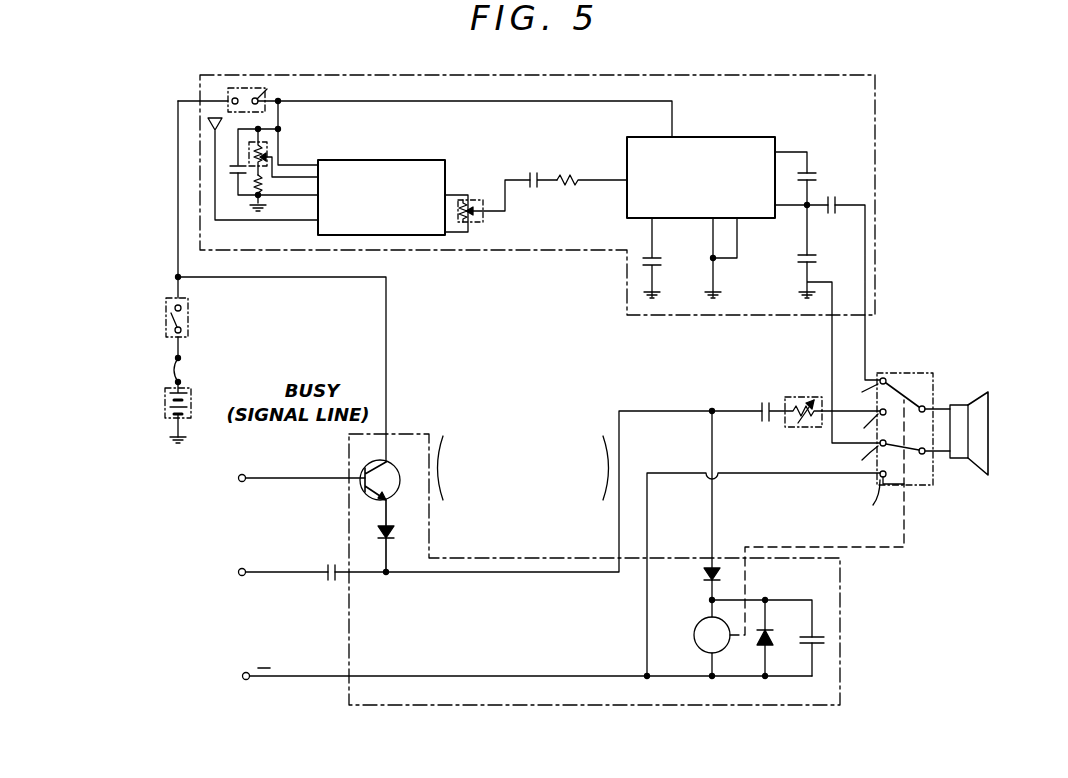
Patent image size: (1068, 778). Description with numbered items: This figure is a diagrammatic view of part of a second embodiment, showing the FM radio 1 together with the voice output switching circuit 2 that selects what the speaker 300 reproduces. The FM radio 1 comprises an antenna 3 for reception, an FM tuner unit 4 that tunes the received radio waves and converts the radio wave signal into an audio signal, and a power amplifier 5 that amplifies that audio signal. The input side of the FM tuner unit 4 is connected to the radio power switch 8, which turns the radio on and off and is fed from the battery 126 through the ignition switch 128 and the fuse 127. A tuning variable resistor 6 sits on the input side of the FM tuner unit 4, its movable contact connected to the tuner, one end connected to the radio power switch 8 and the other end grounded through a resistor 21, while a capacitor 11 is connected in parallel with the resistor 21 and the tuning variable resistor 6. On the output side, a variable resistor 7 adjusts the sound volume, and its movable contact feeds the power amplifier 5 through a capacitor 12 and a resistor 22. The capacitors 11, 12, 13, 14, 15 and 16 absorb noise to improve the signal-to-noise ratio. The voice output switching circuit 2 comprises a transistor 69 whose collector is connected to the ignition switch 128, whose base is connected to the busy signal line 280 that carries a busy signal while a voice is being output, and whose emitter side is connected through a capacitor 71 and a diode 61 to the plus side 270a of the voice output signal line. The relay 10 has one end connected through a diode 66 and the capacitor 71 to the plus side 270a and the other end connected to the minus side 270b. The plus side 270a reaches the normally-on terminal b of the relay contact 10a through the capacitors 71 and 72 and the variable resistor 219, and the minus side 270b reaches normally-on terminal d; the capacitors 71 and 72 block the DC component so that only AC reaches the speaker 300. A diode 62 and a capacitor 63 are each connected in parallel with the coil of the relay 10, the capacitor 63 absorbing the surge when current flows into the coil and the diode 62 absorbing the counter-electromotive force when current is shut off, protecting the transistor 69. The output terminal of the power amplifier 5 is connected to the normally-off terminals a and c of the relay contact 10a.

The FM radio 1 is at (740, 75).
The voice output switching circuit 2 is at (487, 557).
The antenna 3 is at (208, 125).
The FM tuner unit 4 is at (432, 160).
The power amplifier 5 is at (745, 137).
The tuning variable resistor 6 is at (266, 155).
The sound volume variable resistor 7 is at (483, 220).
The radio power switch 8 is at (263, 88).
The relay RY1 10 is at (698, 642).
The relay contact 10a is at (926, 373).
The capacitor 11 is at (236, 178).
The capacitor 12 is at (531, 172).
The capacitor 13 is at (660, 262).
The capacitor 14 is at (812, 172).
The capacitor 15 is at (812, 262).
The capacitor 16 is at (836, 200).
The resistor 21 is at (266, 190).
The resistor 22 is at (573, 172).
The diode 61 is at (391, 537).
The diode 62 is at (760, 644).
The capacitor 63 is at (806, 645).
The diode 66 is at (705, 576).
The transistor 69 is at (392, 462).
The capacitor 71 is at (328, 582).
The capacitor 72 is at (763, 421).
The battery 126 is at (188, 392).
The fuse 127 is at (181, 362).
The ignition switch 128 is at (189, 312).
The variable resistor 219 is at (797, 428).
The busy signal line 280 is at (290, 477).
The plus side of voice output signal line 270a is at (288, 571).
The minus side of voice output signal line 270b is at (288, 675).
The speaker 300 is at (970, 470).